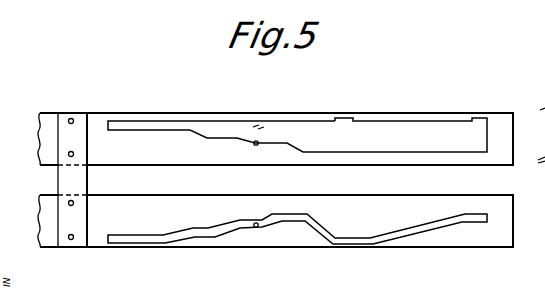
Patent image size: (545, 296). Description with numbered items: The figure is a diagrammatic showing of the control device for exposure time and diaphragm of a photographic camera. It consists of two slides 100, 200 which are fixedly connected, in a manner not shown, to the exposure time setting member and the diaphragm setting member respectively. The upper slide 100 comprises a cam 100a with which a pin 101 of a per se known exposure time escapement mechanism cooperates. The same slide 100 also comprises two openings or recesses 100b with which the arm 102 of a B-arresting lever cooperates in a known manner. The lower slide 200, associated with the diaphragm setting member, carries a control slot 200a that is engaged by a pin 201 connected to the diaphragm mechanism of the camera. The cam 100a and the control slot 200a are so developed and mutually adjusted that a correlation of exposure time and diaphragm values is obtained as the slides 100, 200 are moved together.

The slide 100 is at (97, 122).
The cam 100a is at (230, 138).
The openings 100b is at (472, 118).
The pin 101 is at (260, 139).
The arm of B-arresting lever 102 is at (258, 126).
The slide 200 is at (94, 234).
The control slot 200a is at (230, 230).
The pin 201 is at (258, 228).